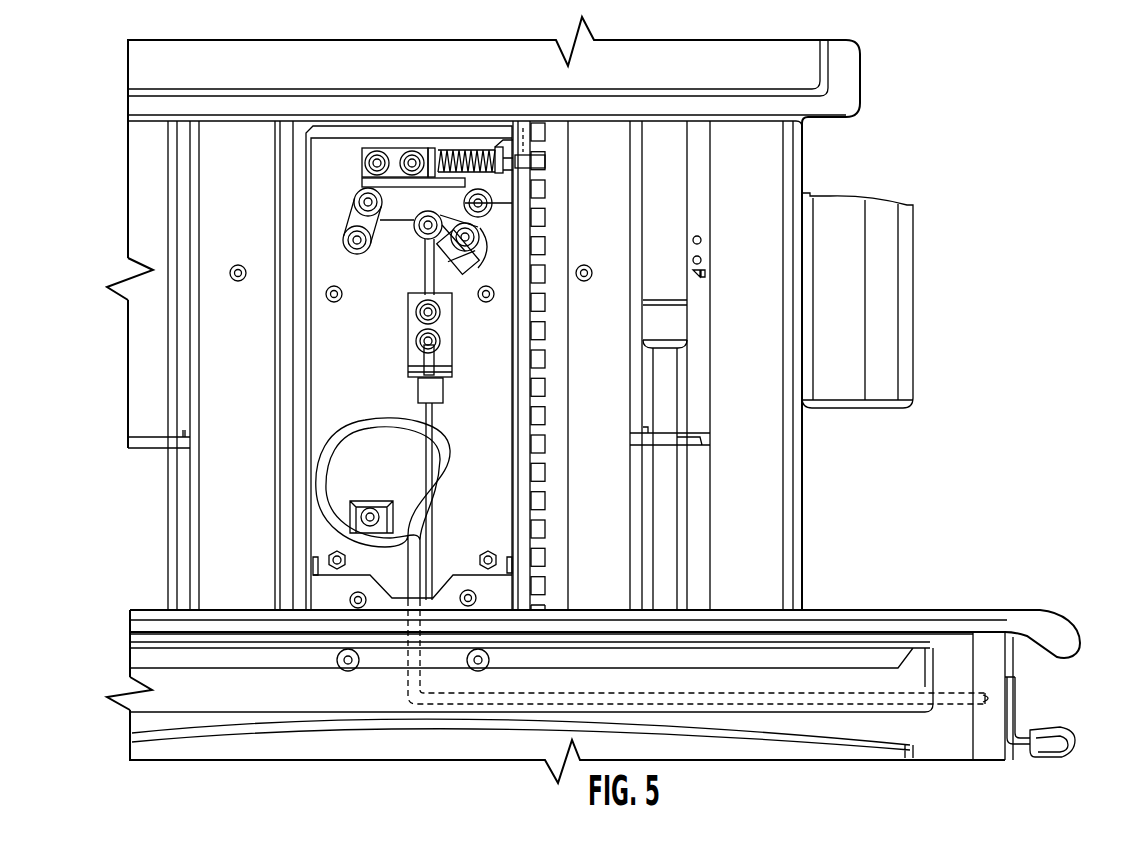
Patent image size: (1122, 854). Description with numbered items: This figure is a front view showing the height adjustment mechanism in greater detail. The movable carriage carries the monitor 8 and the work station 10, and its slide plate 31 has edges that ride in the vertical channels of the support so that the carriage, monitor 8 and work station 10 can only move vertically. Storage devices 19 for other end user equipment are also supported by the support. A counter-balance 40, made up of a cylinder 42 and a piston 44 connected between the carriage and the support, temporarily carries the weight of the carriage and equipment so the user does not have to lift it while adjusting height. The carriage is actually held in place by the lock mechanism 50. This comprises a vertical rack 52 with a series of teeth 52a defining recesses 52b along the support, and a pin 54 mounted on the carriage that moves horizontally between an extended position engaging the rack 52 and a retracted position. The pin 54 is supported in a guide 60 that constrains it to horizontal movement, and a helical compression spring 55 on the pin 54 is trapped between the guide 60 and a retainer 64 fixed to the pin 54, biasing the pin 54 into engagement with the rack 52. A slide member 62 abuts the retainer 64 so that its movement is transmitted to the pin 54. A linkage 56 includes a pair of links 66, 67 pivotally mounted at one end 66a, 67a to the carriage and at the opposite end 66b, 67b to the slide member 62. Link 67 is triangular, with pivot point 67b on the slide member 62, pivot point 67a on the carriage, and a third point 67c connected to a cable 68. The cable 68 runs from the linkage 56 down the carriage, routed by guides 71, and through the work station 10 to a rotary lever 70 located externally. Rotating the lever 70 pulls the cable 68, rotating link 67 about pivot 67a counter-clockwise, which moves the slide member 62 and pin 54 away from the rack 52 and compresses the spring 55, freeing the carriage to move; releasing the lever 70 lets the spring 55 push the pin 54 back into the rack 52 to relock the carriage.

The monitor 8 is at (853, 83).
The work station 10 is at (1080, 614).
The storage devices 19 is at (907, 204).
The slide plate 31 is at (330, 377).
The counter-balance 40 is at (694, 196).
The cylinder 42 is at (680, 292).
The piston 44 is at (672, 512).
The lock mechanism 50 is at (258, 322).
The vertical rack 52 is at (568, 365).
The teeth 52a is at (545, 143).
The recesses 52b is at (545, 168).
The pin 54 is at (545, 158).
The spring 55 is at (455, 150).
The linkage 56 is at (376, 175).
The guide 60 is at (434, 148).
The slide member 62 is at (397, 220).
The retainer 64 is at (499, 147).
The link 66 is at (380, 232).
The end 66a is at (356, 254).
The end 66b is at (362, 199).
The link 67 is at (481, 222).
The pivot point 67a is at (453, 268).
The pivot point 67b is at (470, 208).
The point 67c is at (427, 240).
The cable 68 is at (427, 414).
The rotary lever 70 is at (1048, 726).
The guides 71 is at (447, 358).